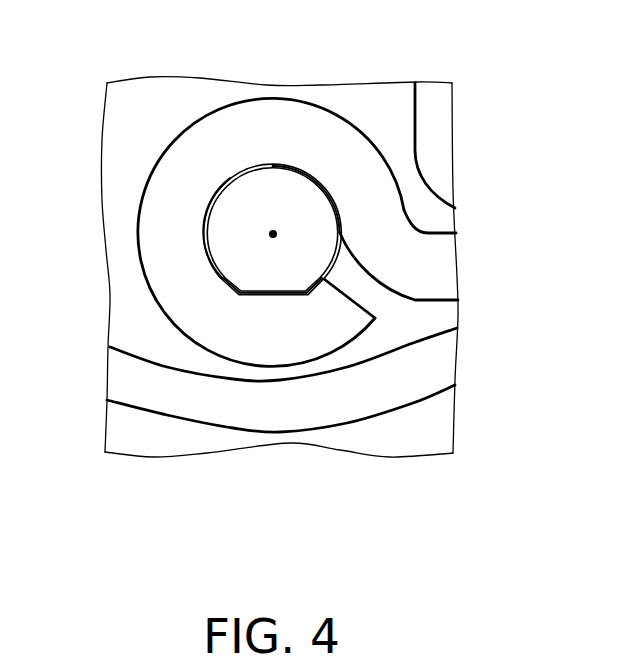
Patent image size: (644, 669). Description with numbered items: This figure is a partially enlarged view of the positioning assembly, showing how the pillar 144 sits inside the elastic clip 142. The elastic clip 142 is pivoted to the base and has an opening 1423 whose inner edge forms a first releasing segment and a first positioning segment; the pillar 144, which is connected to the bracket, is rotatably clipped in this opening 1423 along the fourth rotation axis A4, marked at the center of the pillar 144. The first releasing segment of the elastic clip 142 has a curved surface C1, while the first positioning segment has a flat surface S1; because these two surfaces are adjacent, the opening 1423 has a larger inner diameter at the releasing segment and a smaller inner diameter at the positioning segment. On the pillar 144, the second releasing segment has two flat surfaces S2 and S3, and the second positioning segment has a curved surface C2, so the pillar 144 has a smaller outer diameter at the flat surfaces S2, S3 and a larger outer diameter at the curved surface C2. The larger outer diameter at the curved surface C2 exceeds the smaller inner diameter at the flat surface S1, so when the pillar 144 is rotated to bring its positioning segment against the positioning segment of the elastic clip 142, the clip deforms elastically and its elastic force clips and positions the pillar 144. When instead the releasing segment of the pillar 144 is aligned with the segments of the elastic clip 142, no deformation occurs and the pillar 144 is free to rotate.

The pillar 144 is at (257, 193).
The fourth rotation axis A4 is at (273, 230).
The curved surface C1 is at (213, 197).
The curved surface C2 is at (299, 187).
The flat surface S1 is at (264, 296).
The flat surface S2 is at (253, 285).
The flat surface S3 is at (293, 283).
The elastic clip 142 is at (430, 273).
The opening 1423 is at (343, 272).